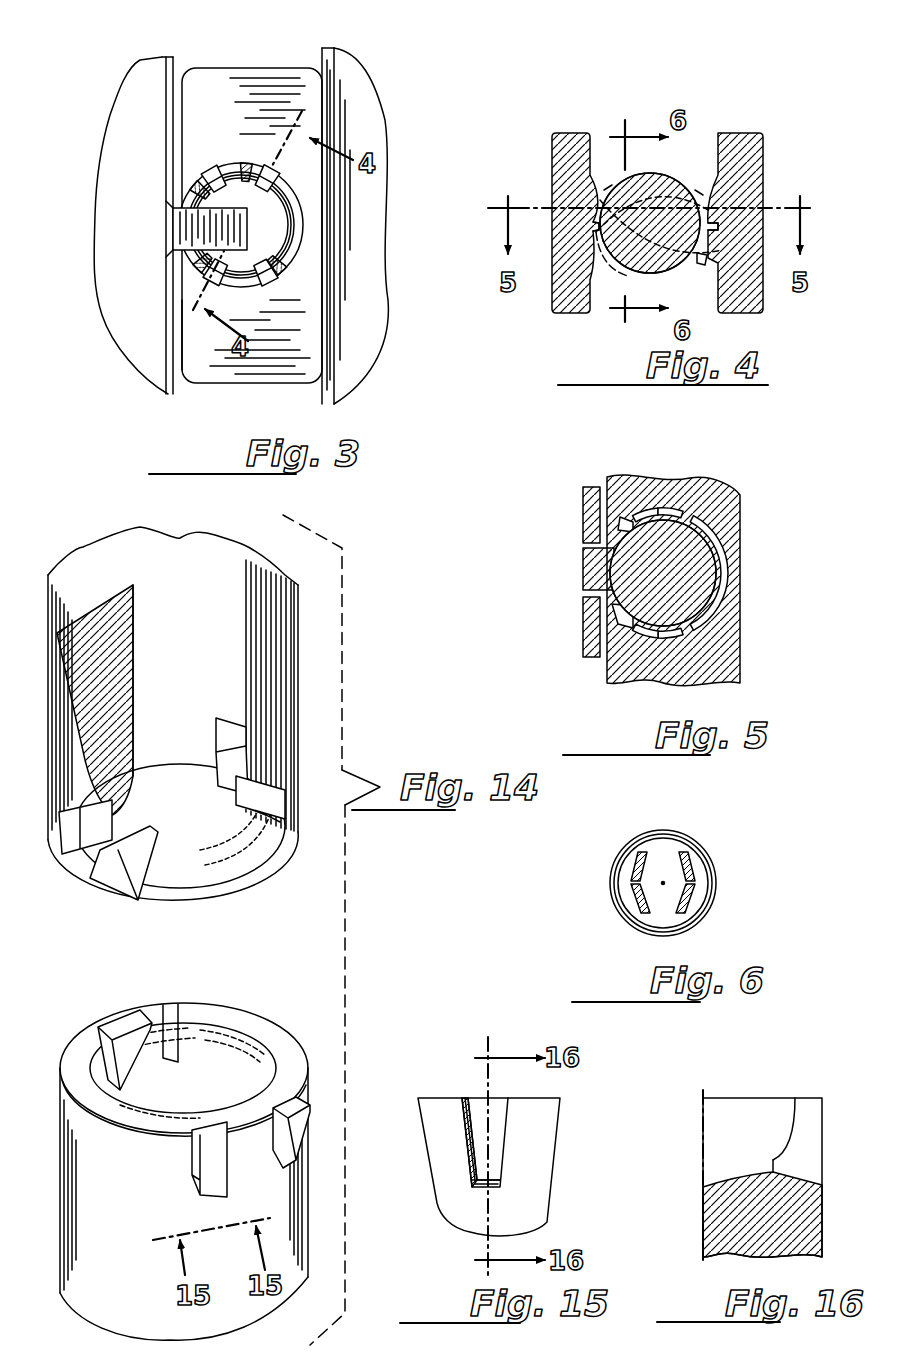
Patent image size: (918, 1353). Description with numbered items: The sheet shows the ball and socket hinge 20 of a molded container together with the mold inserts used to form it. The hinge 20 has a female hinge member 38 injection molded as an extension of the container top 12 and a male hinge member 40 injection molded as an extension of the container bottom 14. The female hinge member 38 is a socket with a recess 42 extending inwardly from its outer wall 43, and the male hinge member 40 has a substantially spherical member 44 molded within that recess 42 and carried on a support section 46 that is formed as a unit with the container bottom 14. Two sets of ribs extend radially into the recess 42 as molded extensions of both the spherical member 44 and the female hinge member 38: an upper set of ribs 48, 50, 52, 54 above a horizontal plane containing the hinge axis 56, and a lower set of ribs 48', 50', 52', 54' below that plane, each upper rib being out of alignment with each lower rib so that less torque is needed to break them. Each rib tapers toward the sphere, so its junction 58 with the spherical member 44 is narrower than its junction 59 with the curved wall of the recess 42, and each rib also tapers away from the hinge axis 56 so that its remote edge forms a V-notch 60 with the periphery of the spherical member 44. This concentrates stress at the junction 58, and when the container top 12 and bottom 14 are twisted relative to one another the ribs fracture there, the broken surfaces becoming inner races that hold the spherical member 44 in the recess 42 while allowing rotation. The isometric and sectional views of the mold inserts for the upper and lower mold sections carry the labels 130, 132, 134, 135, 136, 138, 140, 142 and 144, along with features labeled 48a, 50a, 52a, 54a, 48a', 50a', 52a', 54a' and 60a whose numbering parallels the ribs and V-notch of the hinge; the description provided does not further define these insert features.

In FIG. 3, the container top 12 is at (364, 116).
In FIG. 3, the container bottom 14 is at (108, 262).
In FIG. 5, the container bottom 14 is at (585, 531).
In FIG. 3, the hinge 20 is at (198, 60).
In FIG. 3, the female hinge member 38 is at (198, 383).
In FIG. 4, the female hinge member 38 is at (748, 133).
In FIG. 5, the female hinge member 38 is at (740, 500).
In FIG. 3, the male hinge member 40 is at (180, 206).
In FIG. 5, the male hinge member 40 is at (598, 595).
In FIG. 3, the recess 42 is at (293, 207).
In FIG. 3, the outer wall 43 is at (182, 330).
In FIG. 3, the spherical member 44 is at (233, 182).
In FIG. 4, the spherical member 44 is at (655, 262).
In FIG. 5, the spherical member 44 is at (702, 573).
In FIG. 6, the spherical member 44 is at (666, 916).
In FIG. 3, the support section 46 is at (198, 221).
In FIG. 3, the rib 48 is at (204, 143).
In FIG. 5, the rib 48 is at (654, 478).
In FIG. 3, the rib 48' is at (160, 163).
In FIG. 3, the rib 50 is at (281, 172).
In FIG. 4, the rib 50 is at (778, 176).
In FIG. 5, the rib 50 is at (706, 532).
In FIG. 3, the rib 50' is at (257, 150).
In FIG. 4, the rib 50' is at (705, 275).
In FIG. 3, the rib 52 is at (288, 281).
In FIG. 5, the rib 52 is at (717, 645).
In FIG. 6, the rib 52 is at (719, 853).
In FIG. 3, the rib 52' is at (321, 260).
In FIG. 6, the rib 52' is at (725, 896).
In FIG. 3, the rib 54 is at (173, 273).
In FIG. 4, the rib 54 is at (551, 184).
In FIG. 5, the rib 54 is at (603, 604).
In FIG. 6, the rib 54 is at (602, 859).
In FIG. 3, the rib 54' is at (237, 285).
In FIG. 6, the rib 54' is at (600, 903).
In FIG. 6, the hinge axis 56 is at (663, 880).
In FIG. 4, the junction 58 is at (675, 176).
In FIG. 4, the junction 59 is at (750, 185).
In FIG. 4, the V-notch 60 is at (612, 185).
In FIG. 14, the upper nut body 130 is at (240, 546).
In FIG. 14, the lower nut body 132 is at (298, 1285).
In FIG. 15, the lower nut body 132 is at (547, 1222).
In FIG. 14, the outer wall 134 is at (297, 650).
In FIG. 14, the outer wall 135 is at (308, 1190).
In FIG. 14, the bore 136 is at (234, 860).
In FIG. 14, the bore 138 is at (258, 1045).
In FIG. 16, the bore 138 is at (786, 1120).
In FIG. 14, the slot 140 is at (136, 670).
In FIG. 14, the slot face 142 is at (92, 612).
In FIG. 15, the seat 144 is at (495, 1176).
In FIG. 16, the seat 144 is at (823, 1169).
In FIG. 14, the tab 48a is at (63, 842).
In FIG. 14, the tab 50a is at (134, 882).
In FIG. 14, the tab 52a is at (288, 797).
In FIG. 14, the tab 54a is at (223, 736).
In FIG. 14, the tab 48a' is at (96, 1042).
In FIG. 14, the tab 50a' is at (199, 1010).
In FIG. 14, the tab 52a' is at (313, 1115).
In FIG. 14, the tab 54a' is at (173, 1160).
In FIG. 15, the tab 54a' is at (458, 1122).
In FIG. 16, the shoulder 60a is at (771, 1160).